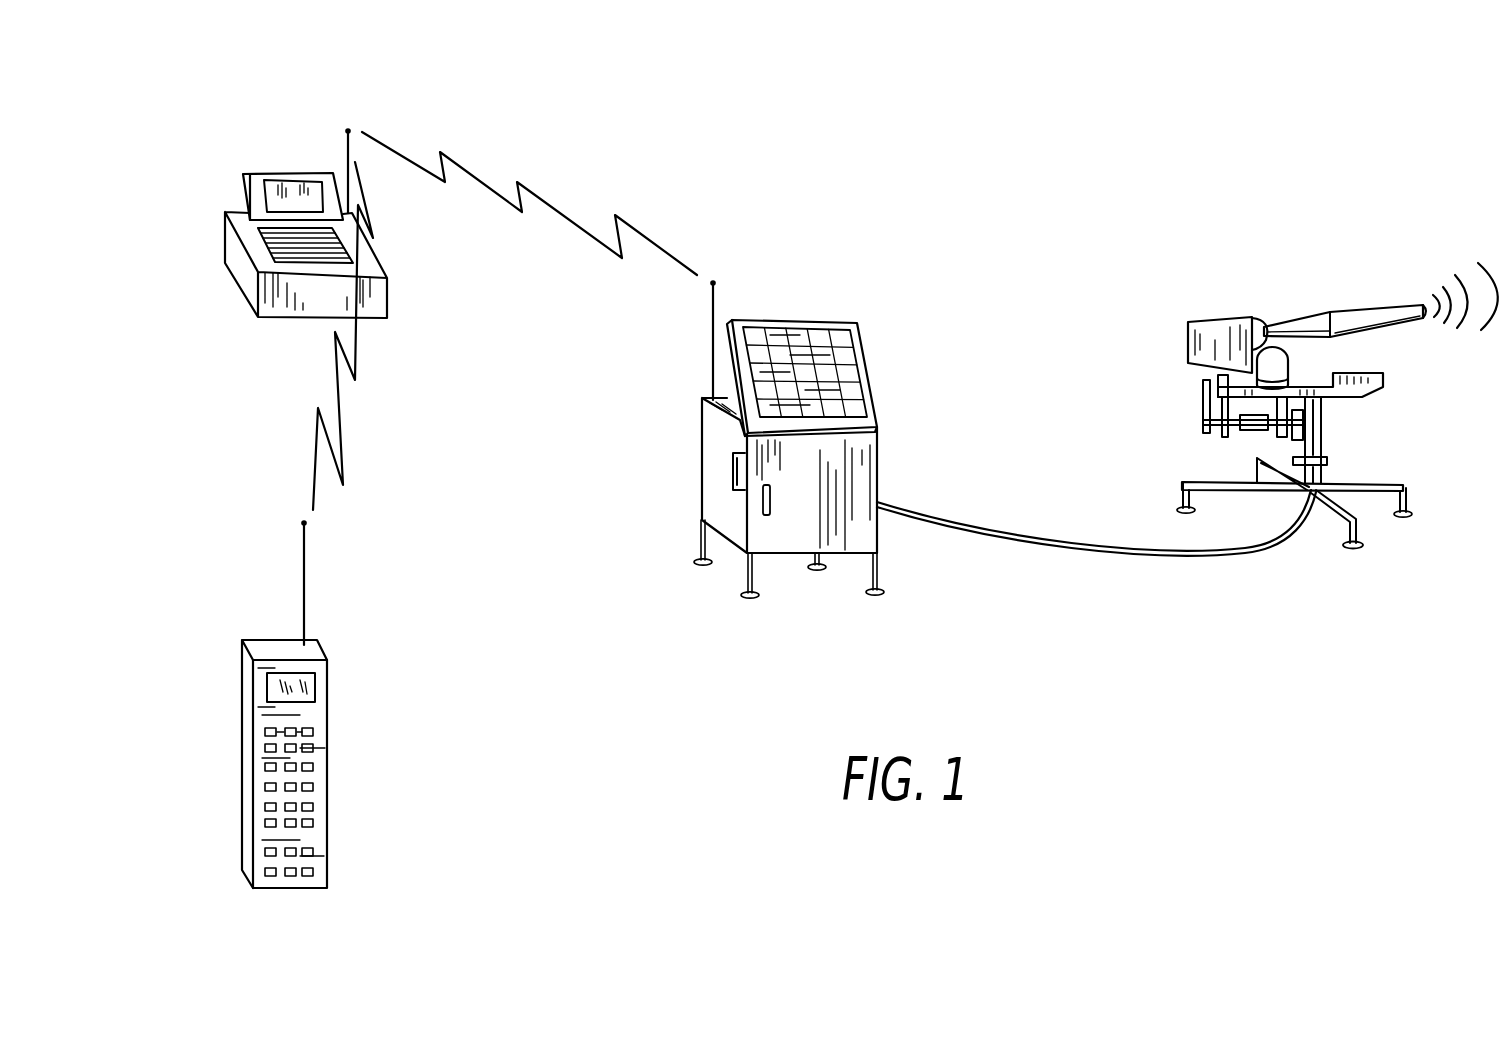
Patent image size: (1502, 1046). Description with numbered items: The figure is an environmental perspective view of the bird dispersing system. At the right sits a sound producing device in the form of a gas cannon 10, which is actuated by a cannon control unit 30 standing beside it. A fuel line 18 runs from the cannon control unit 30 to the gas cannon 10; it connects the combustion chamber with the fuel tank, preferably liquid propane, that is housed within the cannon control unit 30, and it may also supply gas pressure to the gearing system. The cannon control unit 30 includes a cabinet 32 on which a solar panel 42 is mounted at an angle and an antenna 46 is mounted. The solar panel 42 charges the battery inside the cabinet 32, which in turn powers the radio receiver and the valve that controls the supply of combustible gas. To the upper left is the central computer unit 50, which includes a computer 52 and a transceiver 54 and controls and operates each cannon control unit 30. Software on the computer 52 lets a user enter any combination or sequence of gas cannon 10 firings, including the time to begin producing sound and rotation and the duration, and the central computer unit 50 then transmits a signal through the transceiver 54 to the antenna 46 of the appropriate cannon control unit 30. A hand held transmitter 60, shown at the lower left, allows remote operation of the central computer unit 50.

The gas cannon 10 is at (1272, 272).
The fuel line 18 is at (1053, 538).
The cannon control unit 30 is at (864, 296).
The cabinet 32 is at (698, 465).
The solar panel 42 is at (847, 372).
The antenna 46 is at (713, 327).
The central computer unit 50 is at (277, 140).
The computer 52 is at (243, 193).
The transceiver 54 is at (378, 254).
The hand held transmitter 60 is at (327, 742).